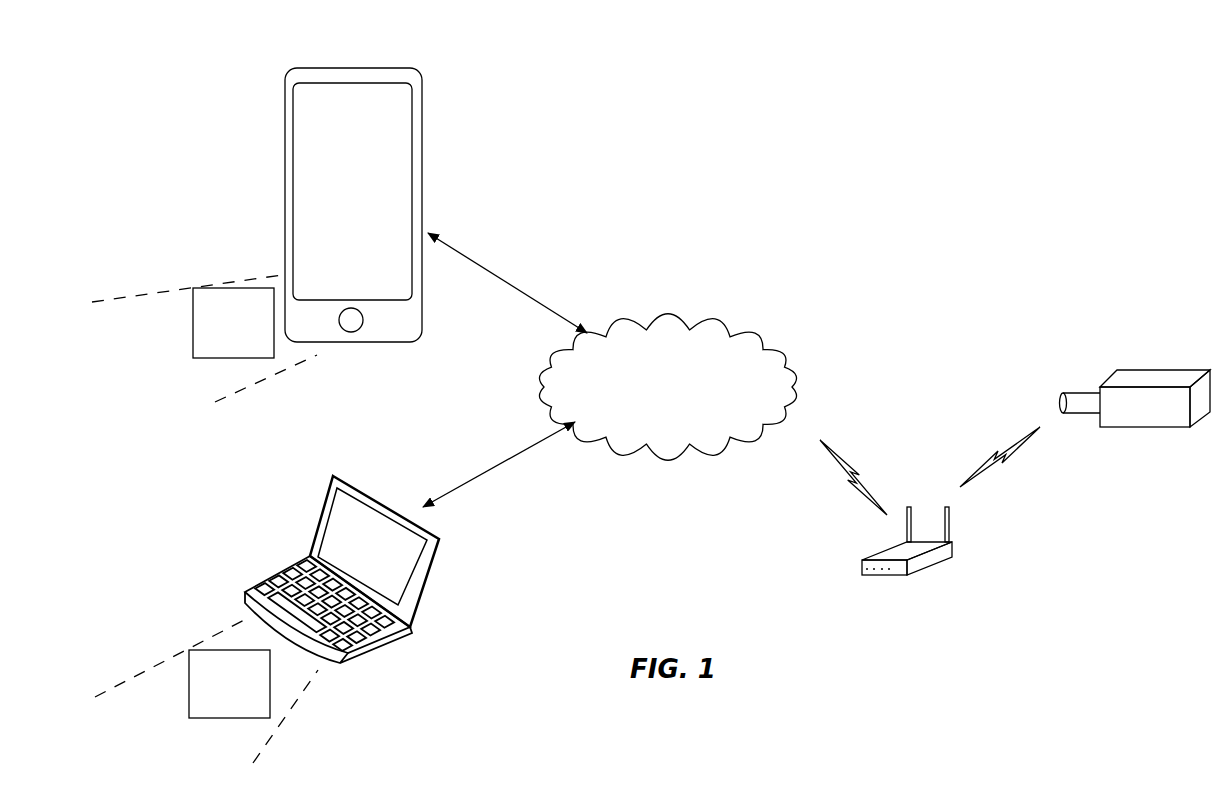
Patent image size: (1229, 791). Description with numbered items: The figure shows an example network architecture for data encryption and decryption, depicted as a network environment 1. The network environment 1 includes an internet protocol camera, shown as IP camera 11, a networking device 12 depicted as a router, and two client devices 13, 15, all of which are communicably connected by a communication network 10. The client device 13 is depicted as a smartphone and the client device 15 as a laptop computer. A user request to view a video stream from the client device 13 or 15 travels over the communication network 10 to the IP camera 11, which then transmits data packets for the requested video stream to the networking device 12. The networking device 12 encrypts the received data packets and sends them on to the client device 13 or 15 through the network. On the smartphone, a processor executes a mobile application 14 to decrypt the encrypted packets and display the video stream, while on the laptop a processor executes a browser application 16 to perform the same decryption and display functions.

The network environment 1 is at (764, 240).
The communication network 10 is at (668, 325).
The IP camera 11 is at (1155, 370).
The networking device 12 is at (905, 575).
The client device 13 is at (390, 68).
The mobile application 14 is at (193, 342).
The client device 15 is at (345, 473).
The browser application 16 is at (189, 720).